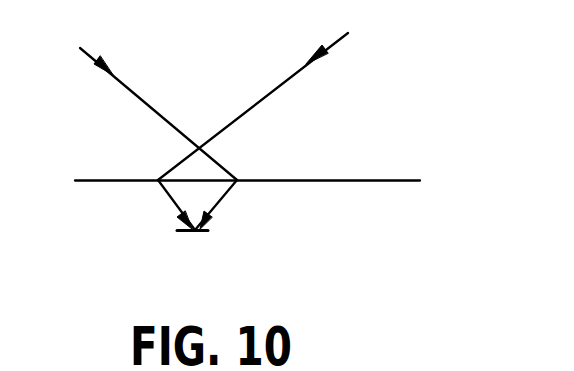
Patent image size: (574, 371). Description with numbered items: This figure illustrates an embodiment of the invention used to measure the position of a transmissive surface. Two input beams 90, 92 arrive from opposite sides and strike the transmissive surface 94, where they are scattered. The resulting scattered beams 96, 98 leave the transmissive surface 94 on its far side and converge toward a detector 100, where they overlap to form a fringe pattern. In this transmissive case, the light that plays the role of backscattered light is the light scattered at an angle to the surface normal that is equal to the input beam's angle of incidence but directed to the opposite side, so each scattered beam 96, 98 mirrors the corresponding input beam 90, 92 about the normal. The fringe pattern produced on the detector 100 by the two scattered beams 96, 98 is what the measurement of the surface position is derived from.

The input beam 90 is at (133, 90).
The input beam 92 is at (300, 70).
The transmissive surface 94 is at (342, 180).
The scattered beam 96 is at (170, 202).
The scattered beam 98 is at (220, 202).
The detector 100 is at (196, 233).